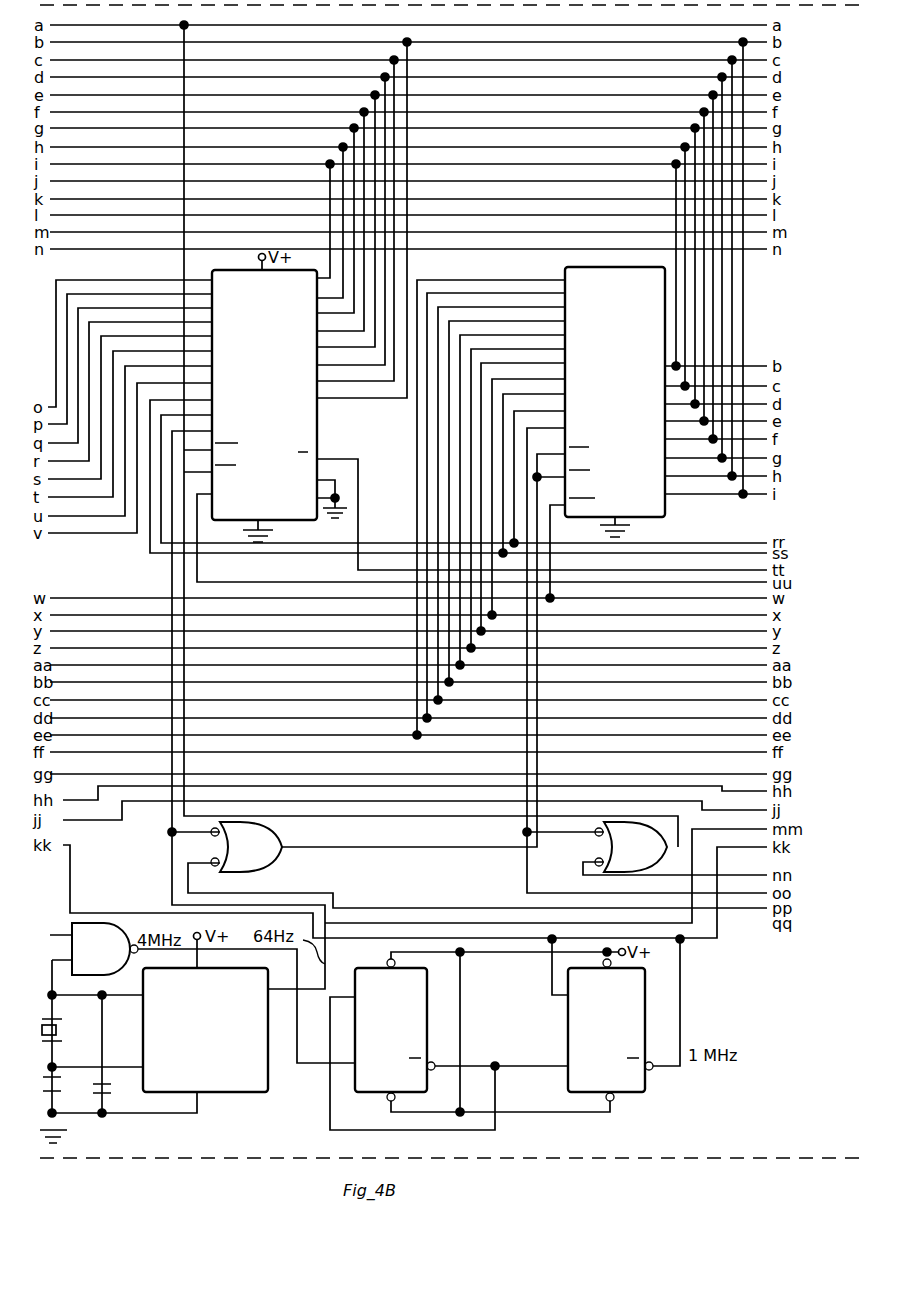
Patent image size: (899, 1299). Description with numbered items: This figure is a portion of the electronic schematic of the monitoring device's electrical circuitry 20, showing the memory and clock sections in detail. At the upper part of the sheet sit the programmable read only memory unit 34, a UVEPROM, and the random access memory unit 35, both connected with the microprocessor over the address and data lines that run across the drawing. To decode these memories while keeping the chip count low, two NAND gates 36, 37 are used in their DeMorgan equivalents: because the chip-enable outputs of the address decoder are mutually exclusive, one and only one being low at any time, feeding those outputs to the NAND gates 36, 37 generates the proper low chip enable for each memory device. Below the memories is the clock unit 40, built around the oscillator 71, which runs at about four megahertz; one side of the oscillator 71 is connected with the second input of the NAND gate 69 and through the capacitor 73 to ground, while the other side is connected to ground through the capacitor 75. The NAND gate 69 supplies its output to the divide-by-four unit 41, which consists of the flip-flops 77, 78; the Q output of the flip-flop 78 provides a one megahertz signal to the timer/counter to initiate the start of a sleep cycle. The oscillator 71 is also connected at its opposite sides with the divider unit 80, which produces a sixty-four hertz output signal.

The electrical circuitry 20 is at (126, 1160).
The programmable read only memory unit 34 is at (318, 435).
The random access memory unit 35 is at (667, 517).
The NAND gate 36 is at (268, 870).
The NAND gate 37 is at (602, 844).
The clock unit 40 is at (166, 1059).
The divide-by-four unit 41 is at (512, 1051).
The NAND gate 69 is at (117, 920).
The oscillator 71 is at (90, 1040).
The capacitor 73 is at (108, 1094).
The capacitor 75 is at (74, 1080).
The flip-flop 77 is at (372, 1092).
The flip-flop 78 is at (568, 1027).
The divider unit 80 is at (262, 1092).